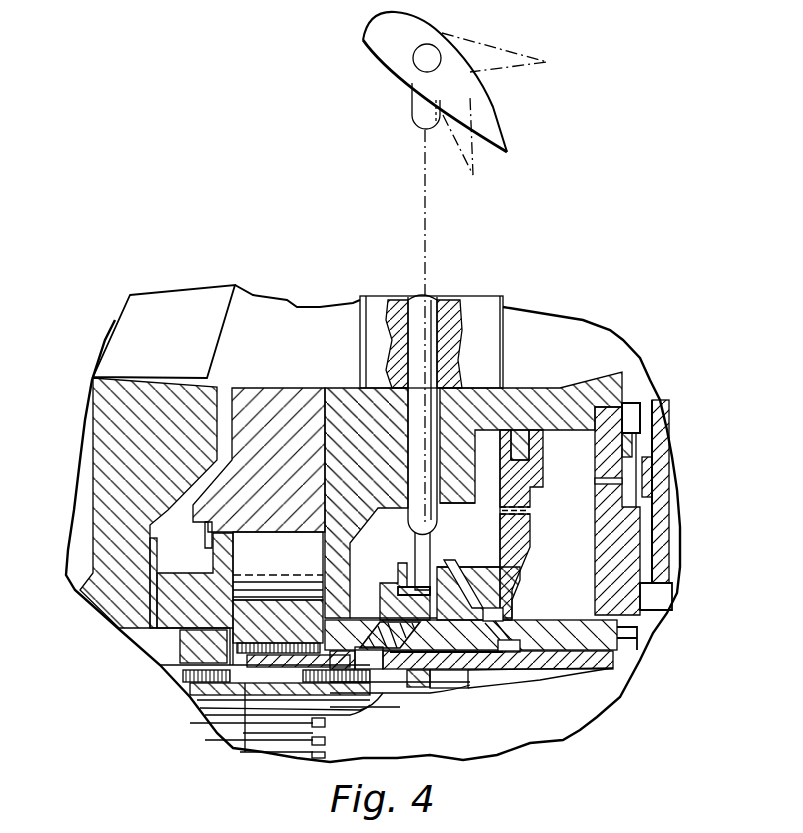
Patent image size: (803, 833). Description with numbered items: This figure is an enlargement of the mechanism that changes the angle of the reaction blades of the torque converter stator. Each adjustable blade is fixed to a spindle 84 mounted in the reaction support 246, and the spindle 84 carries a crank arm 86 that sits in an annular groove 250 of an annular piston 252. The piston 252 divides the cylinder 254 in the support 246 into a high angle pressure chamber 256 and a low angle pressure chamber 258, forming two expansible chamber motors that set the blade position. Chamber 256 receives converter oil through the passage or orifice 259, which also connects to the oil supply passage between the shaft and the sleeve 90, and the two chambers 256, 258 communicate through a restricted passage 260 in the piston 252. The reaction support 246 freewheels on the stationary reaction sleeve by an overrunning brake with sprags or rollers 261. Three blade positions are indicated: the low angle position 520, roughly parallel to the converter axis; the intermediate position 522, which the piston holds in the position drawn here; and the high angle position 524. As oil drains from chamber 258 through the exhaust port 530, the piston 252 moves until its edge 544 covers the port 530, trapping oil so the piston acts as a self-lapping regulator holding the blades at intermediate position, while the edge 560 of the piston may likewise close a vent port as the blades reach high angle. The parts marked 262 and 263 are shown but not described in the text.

The low angle blade position 520 is at (502, 52).
The intermediate blade position 522 is at (507, 143).
The high angle blade position 524 is at (468, 147).
The spindle 84 is at (426, 300).
The crank arm 86 is at (420, 545).
The housing portion 263 is at (138, 320).
The housing wall 262 is at (103, 438).
The reaction support 246 is at (300, 397).
The sprags or rollers 261 is at (277, 550).
The low angle pressure chamber 258 is at (457, 520).
The cylinder 254 is at (548, 432).
The restricted passage 260 is at (527, 511).
The annular piston 252 is at (522, 545).
The high angle pressure chamber 256 is at (580, 523).
The passage 259 is at (645, 480).
The piston edge 560 is at (501, 606).
The annular groove 250 is at (397, 580).
The piston edge 544 is at (373, 611).
The exhaust port 530 is at (375, 628).
The sleeve 90 is at (628, 671).